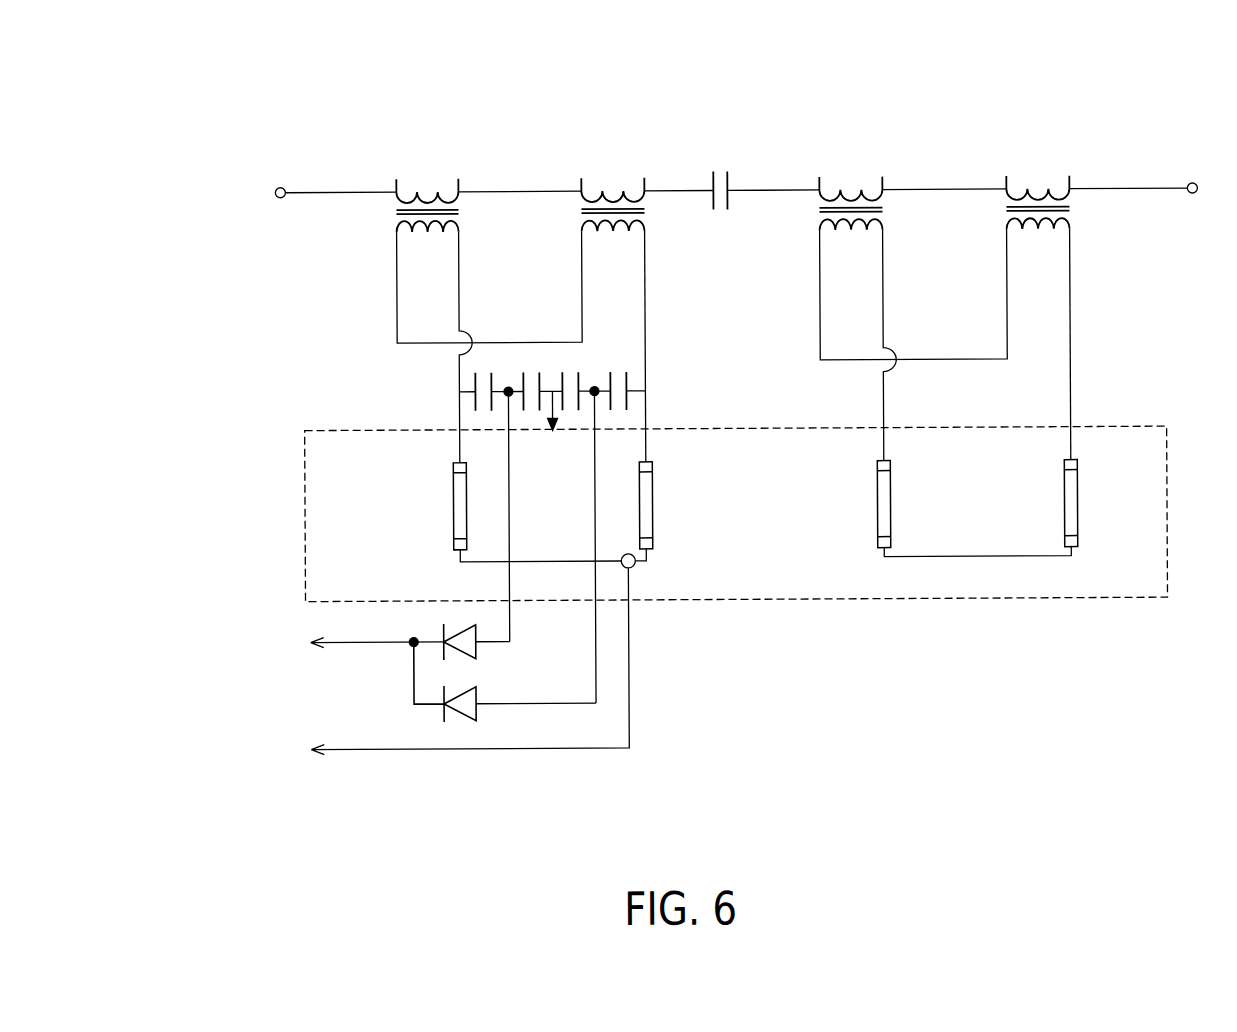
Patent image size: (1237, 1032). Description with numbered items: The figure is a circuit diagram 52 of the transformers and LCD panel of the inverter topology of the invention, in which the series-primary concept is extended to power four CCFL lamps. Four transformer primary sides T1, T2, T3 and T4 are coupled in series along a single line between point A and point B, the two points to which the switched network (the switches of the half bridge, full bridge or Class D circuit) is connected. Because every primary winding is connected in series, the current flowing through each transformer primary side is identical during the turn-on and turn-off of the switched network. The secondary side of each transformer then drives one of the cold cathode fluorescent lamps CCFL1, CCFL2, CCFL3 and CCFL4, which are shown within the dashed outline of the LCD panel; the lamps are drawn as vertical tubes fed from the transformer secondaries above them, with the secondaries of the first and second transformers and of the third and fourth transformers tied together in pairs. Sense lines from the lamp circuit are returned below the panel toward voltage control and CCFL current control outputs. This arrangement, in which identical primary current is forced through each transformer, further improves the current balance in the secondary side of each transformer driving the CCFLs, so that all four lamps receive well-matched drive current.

The circuit diagram 52 is at (472, 91).
The primary side T1 is at (427, 192).
The primary side T2 is at (612, 191).
The primary side T3 is at (850, 190).
The primary side T4 is at (1037, 189).
The CCFL lamp CCFL1 is at (423, 506).
The CCFL lamp CCFL2 is at (680, 504).
The CCFL lamp CCFL3 is at (847, 504).
The CCFL lamp CCFL4 is at (1105, 502).